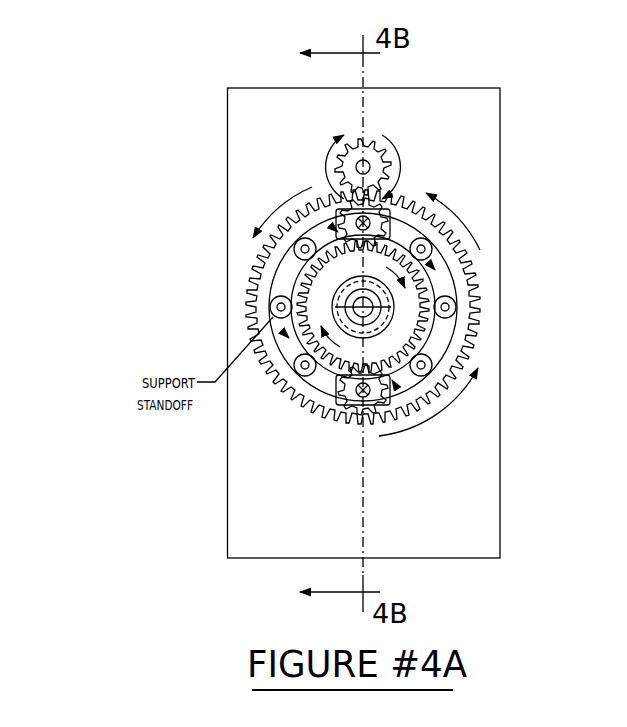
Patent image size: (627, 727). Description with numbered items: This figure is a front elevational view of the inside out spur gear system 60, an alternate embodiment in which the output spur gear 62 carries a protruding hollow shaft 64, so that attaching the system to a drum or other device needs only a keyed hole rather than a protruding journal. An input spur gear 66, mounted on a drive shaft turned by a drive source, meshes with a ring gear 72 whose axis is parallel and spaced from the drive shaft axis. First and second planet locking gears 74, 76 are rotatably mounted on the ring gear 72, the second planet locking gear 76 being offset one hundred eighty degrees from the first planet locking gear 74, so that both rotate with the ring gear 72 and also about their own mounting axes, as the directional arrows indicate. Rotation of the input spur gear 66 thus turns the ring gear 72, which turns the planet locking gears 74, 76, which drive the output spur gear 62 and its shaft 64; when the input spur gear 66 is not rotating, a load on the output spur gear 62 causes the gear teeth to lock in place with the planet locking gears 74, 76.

The inside out spur gear system 60 is at (176, 152).
The output spur gear 62 is at (333, 290).
The hollow shaft 64 is at (378, 307).
The input spur gear 66 is at (366, 136).
The ring gear 72 is at (457, 340).
The first planet locking gear 74 is at (352, 412).
The second planet locking gear 76 is at (373, 228).